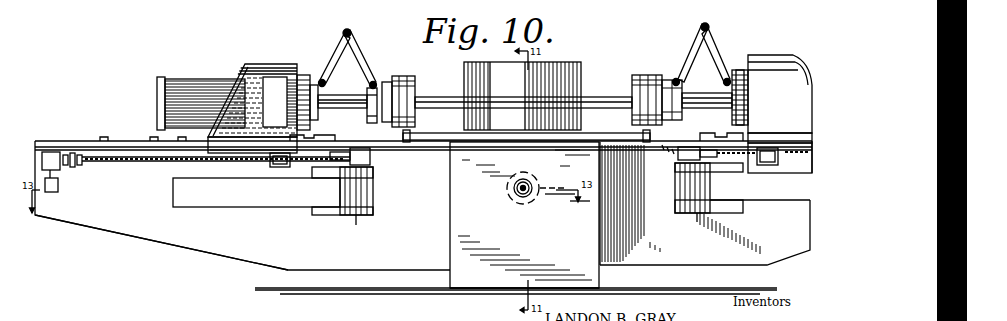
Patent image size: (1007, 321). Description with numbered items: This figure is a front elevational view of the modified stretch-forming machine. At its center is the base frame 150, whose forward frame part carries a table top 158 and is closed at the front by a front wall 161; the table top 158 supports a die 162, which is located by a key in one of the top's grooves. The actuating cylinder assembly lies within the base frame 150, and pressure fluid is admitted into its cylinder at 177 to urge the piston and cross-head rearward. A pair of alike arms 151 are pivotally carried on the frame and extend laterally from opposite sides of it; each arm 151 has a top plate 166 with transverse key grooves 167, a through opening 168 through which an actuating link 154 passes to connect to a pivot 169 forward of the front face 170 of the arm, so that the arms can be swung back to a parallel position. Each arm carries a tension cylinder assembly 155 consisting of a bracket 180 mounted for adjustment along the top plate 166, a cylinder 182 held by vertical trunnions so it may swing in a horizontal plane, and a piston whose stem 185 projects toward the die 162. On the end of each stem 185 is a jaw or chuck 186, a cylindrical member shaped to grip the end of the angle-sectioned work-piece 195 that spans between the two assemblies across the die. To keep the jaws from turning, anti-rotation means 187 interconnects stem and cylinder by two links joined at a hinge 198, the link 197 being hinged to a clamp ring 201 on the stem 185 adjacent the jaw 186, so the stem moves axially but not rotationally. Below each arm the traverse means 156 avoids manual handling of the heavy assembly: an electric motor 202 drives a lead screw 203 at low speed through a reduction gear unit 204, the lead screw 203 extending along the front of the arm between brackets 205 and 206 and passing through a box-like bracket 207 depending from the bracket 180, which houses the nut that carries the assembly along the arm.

The base frame 150 is at (446, 280).
The arm 151 is at (133, 240).
The actuating link 154 is at (373, 190).
The tension cylinder assembly 155 is at (250, 63).
The traverse means 156 is at (132, 165).
The table top 158 is at (482, 141).
The front wall 161 is at (455, 242).
The die 162 is at (572, 66).
The top plate 166 is at (87, 140).
The key groove 167 is at (154, 136).
The through opening 168 is at (273, 207).
The pivot 169 is at (356, 218).
The front face 170 is at (217, 241).
The pressure fluid inlet 177 is at (522, 200).
The bracket 180 is at (287, 63).
The cylinder 182 is at (220, 77).
The stem 185 is at (333, 110).
The jaw or chuck 186 is at (405, 78).
The anti-rotation means 187 is at (354, 36).
The work-piece 195 is at (460, 96).
The link 197 is at (368, 62).
The hinge 198 is at (326, 75).
The clamp ring 201 is at (372, 120).
The electric motor 202 is at (57, 192).
The lead screw 203 is at (164, 158).
The reduction gear unit 204 is at (50, 152).
The bracket 205 is at (74, 167).
The bracket 206 is at (373, 157).
The bracket 207 is at (283, 167).